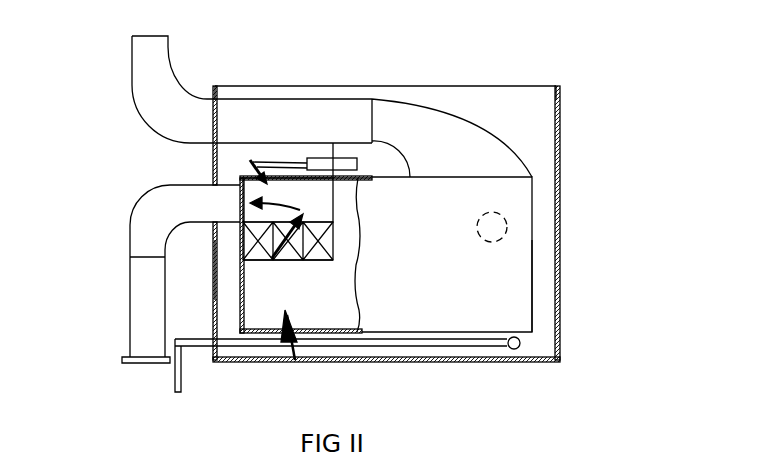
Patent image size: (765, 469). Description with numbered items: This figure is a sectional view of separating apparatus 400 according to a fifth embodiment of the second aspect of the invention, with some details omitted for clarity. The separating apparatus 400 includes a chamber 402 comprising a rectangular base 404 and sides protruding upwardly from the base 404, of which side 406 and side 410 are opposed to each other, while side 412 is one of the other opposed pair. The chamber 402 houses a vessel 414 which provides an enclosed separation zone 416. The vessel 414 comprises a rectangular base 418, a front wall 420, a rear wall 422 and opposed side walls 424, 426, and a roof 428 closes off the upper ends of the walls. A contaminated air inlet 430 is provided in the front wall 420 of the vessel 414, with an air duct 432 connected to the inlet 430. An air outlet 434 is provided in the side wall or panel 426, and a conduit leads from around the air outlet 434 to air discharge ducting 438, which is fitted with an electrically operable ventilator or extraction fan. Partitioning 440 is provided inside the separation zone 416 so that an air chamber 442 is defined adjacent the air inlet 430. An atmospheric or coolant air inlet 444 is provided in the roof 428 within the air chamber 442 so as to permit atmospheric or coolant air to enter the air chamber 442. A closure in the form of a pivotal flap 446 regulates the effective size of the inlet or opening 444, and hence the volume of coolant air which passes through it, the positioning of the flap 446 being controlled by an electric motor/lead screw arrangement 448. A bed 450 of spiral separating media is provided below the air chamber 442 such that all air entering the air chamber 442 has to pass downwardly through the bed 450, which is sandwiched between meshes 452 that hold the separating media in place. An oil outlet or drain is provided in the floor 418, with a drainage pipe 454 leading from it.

The separating apparatus 400 is at (632, 90).
The chamber 402 is at (592, 250).
The rectangular base 404 is at (477, 363).
The side 406 is at (213, 292).
The side 410 is at (560, 148).
The side 412 is at (490, 98).
The vessel 414 is at (550, 304).
The enclosed separation zone 416 is at (295, 344).
The rectangular base 418 is at (273, 333).
The front wall 420 is at (244, 310).
The rear wall 422 is at (535, 268).
The side wall 424 is at (472, 288).
The side wall 426 is at (347, 327).
The roof 428 is at (352, 181).
The contaminated air inlet 430 is at (288, 182).
The air duct 432 is at (129, 269).
The air outlet 434 is at (508, 225).
The air discharge ducting 438 is at (281, 103).
The partitioning 440 is at (335, 212).
The air chamber 442 is at (218, 288).
The atmospheric or coolant air inlet 444 is at (272, 177).
The pivotal flap 446 is at (250, 163).
The electric motor/lead screw arrangement 448 is at (327, 158).
The bed 450 is at (300, 260).
The meshes 452 is at (337, 222).
The drainage pipe 454 is at (173, 372).